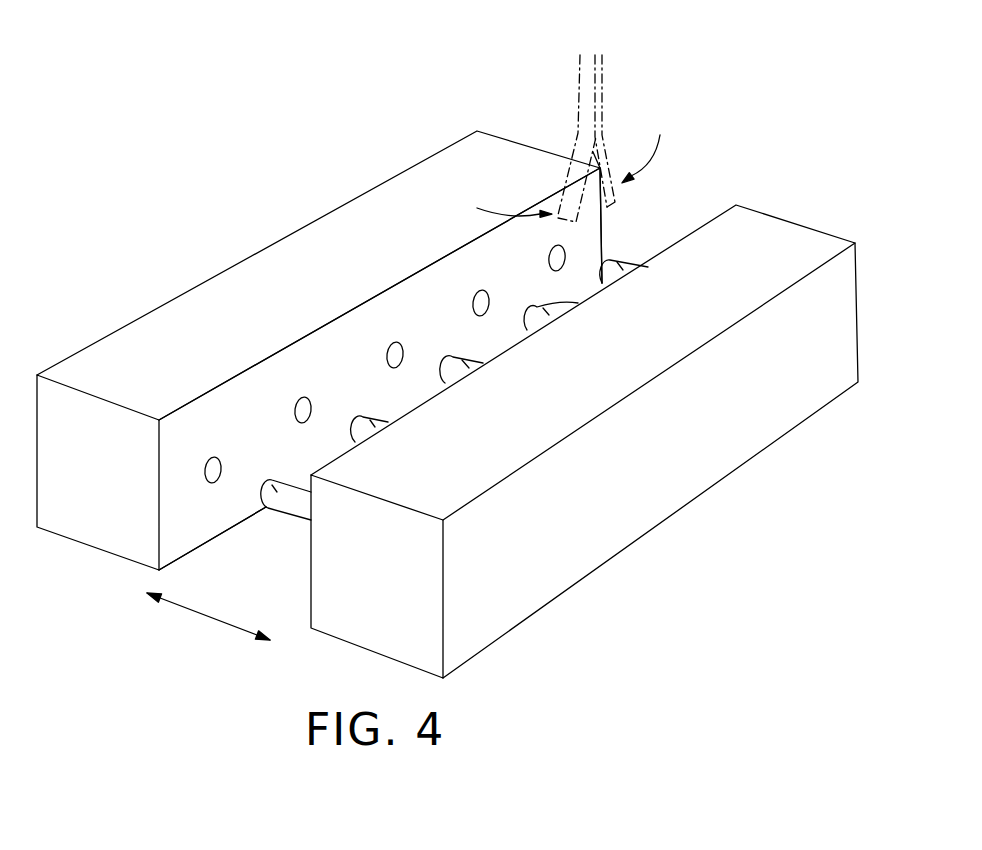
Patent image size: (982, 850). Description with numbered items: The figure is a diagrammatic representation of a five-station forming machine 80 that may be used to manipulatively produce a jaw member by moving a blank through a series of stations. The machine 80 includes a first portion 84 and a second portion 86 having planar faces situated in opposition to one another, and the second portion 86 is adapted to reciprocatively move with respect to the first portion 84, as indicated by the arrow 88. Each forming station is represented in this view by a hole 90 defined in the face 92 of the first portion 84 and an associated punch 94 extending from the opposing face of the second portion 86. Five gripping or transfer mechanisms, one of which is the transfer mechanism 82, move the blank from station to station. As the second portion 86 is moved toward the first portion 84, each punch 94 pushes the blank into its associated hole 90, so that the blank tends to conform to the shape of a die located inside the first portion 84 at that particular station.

The forming machine 80 is at (447, 366).
The gripping or transfer mechanism 82 is at (602, 168).
The first portion 84 is at (88, 532).
The second portion 86 is at (750, 443).
The arrow 88 is at (200, 613).
The hole 90 is at (550, 256).
The face 92 is at (205, 410).
The punch 94 is at (388, 422).